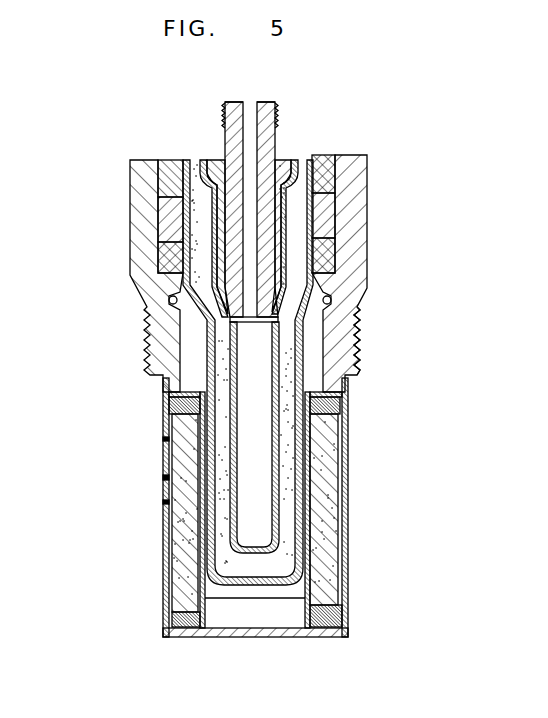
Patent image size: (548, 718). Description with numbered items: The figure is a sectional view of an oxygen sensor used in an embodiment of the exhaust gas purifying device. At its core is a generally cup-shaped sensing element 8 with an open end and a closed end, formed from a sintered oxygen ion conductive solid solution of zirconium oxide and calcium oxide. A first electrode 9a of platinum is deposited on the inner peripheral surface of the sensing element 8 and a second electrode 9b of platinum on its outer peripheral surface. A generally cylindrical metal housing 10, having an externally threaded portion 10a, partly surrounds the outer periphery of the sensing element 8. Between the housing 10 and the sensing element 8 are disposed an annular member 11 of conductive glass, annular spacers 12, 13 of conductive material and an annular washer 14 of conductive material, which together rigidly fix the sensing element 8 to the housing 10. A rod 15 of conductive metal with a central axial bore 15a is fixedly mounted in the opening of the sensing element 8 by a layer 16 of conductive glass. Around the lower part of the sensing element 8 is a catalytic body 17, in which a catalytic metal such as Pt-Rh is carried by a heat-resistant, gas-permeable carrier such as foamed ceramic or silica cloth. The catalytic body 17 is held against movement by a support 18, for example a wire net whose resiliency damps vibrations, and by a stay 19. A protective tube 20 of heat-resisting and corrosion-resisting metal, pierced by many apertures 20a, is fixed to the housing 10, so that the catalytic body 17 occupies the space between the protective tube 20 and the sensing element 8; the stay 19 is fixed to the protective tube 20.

The sensing element 8 is at (310, 517).
The first electrode 9a is at (268, 445).
The second electrode 9b is at (296, 468).
The housing 10 is at (367, 171).
The externally threaded portion 10a is at (362, 337).
The annular member 11 is at (163, 207).
The annular spacer 12 is at (168, 167).
The annular spacer 13 is at (330, 250).
The annular washer 14 is at (168, 299).
The rod 15 is at (286, 128).
The central axial bore 15a is at (247, 103).
The layer of conductive glass 16 is at (215, 167).
The catalytic body 17 is at (180, 517).
The support 18 is at (327, 612).
The stay 19 is at (337, 634).
The protective tube 20 is at (163, 451).
The apertures 20a is at (163, 476).